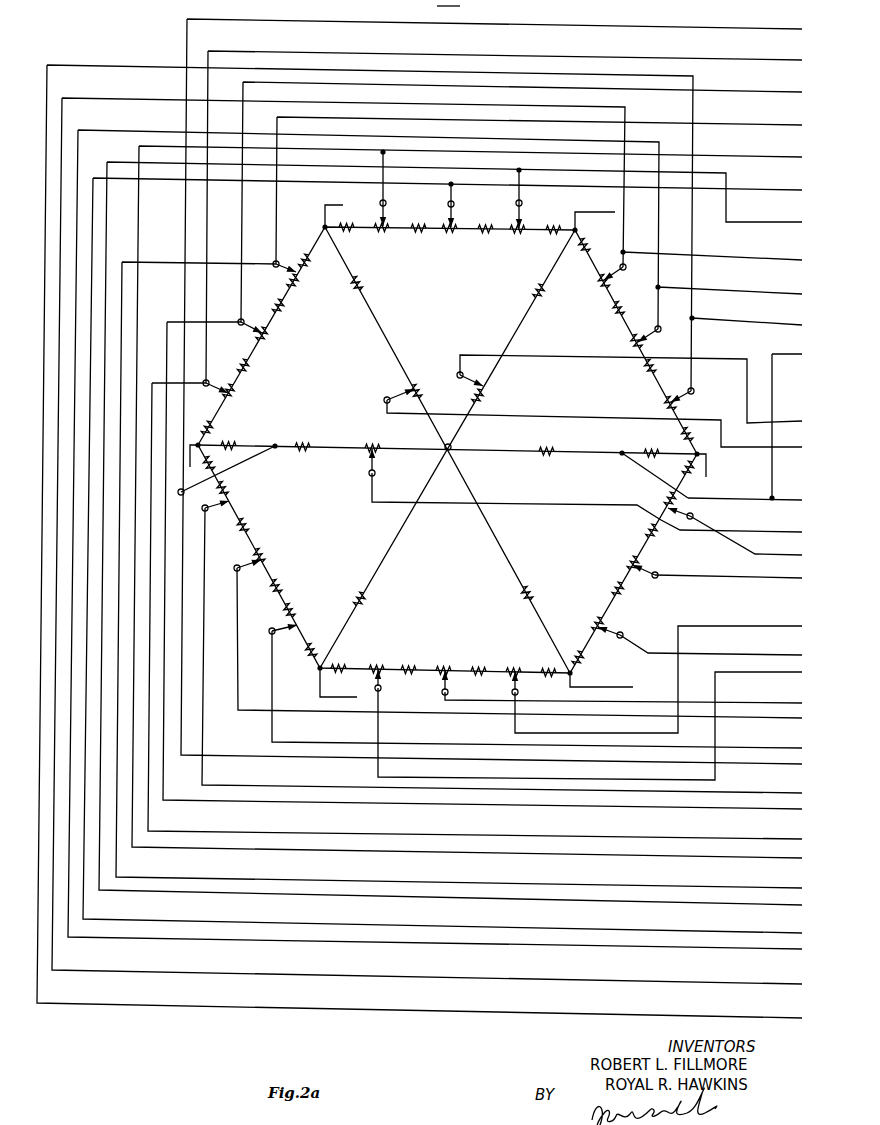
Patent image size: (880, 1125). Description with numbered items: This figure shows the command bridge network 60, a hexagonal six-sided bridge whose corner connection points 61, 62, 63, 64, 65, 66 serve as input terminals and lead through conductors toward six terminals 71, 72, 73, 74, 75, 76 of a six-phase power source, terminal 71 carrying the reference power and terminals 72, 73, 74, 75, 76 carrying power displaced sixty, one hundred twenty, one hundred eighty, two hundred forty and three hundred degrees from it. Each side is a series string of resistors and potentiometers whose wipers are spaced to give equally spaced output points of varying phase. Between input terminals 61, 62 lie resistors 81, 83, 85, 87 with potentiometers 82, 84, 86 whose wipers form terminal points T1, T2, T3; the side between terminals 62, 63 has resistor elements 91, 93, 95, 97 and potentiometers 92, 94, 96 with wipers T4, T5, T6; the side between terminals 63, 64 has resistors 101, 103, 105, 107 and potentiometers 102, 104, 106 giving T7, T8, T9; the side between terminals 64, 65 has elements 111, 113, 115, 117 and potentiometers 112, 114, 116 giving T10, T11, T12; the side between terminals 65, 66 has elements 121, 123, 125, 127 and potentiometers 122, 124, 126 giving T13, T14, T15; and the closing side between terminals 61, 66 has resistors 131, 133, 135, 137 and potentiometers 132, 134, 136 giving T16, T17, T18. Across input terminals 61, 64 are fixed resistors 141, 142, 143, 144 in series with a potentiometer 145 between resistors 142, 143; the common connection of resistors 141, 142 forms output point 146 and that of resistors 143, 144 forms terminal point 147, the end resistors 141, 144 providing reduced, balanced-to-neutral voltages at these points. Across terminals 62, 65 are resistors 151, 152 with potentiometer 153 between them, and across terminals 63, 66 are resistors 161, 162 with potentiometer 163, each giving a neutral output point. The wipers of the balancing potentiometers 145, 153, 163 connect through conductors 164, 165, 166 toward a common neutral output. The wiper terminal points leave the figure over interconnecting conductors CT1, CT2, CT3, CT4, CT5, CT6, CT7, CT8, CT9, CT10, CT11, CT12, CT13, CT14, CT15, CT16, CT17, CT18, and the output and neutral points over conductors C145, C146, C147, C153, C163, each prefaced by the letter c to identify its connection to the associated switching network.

The bridge network 60 is at (467, 316).
The input terminal 61 is at (705, 444).
The input terminal 62 is at (580, 231).
The input terminal 63 is at (312, 218).
The input terminal 64 is at (198, 443).
The input terminal 65 is at (318, 670).
The input terminal 66 is at (574, 674).
The terminal 71 is at (710, 466).
The terminal 72 is at (594, 210).
The terminal 73 is at (348, 208).
The terminal 74 is at (194, 467).
The terminal 75 is at (343, 682).
The terminal 76 is at (615, 675).
The resistor 81 is at (674, 433).
The potentiometer 82 is at (656, 406).
The resistor 83 is at (637, 372).
The potentiometer 84 is at (623, 344).
The resistor 85 is at (605, 313).
The potentiometer 86 is at (592, 286).
The resistor 87 is at (577, 256).
The resistor 91 is at (556, 239).
The potentiometer 92 is at (521, 245).
The resistor 93 is at (486, 239).
The potentiometer 94 is at (454, 245).
The resistor 95 is at (421, 238).
The potentiometer 96 is at (385, 244).
The resistor 97 is at (350, 238).
The resistor 101 is at (321, 260).
The potentiometer 102 is at (313, 283).
The resistor 103 is at (299, 307).
The potentiometer 104 is at (280, 337).
The resistor 105 is at (262, 367).
The potentiometer 106 is at (248, 392).
The resistor 107 is at (229, 423).
The resistor 111 is at (226, 462).
The potentiometer 112 is at (238, 485).
The resistor 113 is at (258, 523).
The potentiometer 114 is at (275, 552).
The resistor 115 is at (292, 582).
The potentiometer 116 is at (307, 607).
The resistor 117 is at (321, 641).
The resistor 121 is at (347, 658).
The potentiometer 122 is at (381, 653).
The resistor 123 is at (416, 659).
The potentiometer 124 is at (452, 655).
The resistor 125 is at (486, 659).
The potentiometer 126 is at (516, 655).
The resistor 127 is at (546, 661).
The resistor 131 is at (574, 649).
The potentiometer 132 is at (588, 617).
The resistor 133 is at (610, 583).
The potentiometer 134 is at (624, 554).
The resistor 135 is at (639, 528).
The potentiometer 136 is at (659, 495).
The resistor 137 is at (676, 467).
The fixed resistor 141 is at (247, 436).
The fixed resistor 142 is at (310, 434).
The fixed resistor 143 is at (559, 439).
The fixed resistor 144 is at (636, 442).
The potentiometer 145 is at (388, 448).
The output point 146 is at (284, 458).
The terminal point 147 is at (637, 474).
The resistor 151 is at (352, 583).
The resistor 152 is at (525, 287).
The potentiometer 153 is at (496, 388).
The resistor 161 is at (375, 283).
The resistor 162 is at (540, 585).
The potentiometer 163 is at (414, 381).
The conductor 164 is at (516, 496).
The conductor 165 is at (594, 419).
The conductor 166 is at (631, 377).
The terminal point T1 is at (692, 394).
The terminal point T2 is at (658, 334).
The terminal point T3 is at (624, 273).
The terminal point T4 is at (530, 197).
The terminal point T5 is at (462, 204).
The terminal point T6 is at (393, 187).
The terminal point T7 is at (286, 261).
The terminal point T8 is at (251, 322).
The terminal point T9 is at (216, 382).
The terminal point T10 is at (219, 513).
The terminal point T11 is at (252, 574).
The terminal point T12 is at (286, 639).
The terminal point T13 is at (394, 683).
The terminal point T14 is at (461, 685).
The terminal point T15 is at (531, 686).
The terminal point T16 is at (611, 640).
The terminal point T17 is at (650, 581).
The terminal point T18 is at (696, 513).
The interconnecting conductor CT1 is at (419, 541).
The interconnecting conductor CT2 is at (435, 539).
The interconnecting conductor CT3 is at (427, 541).
The interconnecting conductor CT4 is at (450, 533).
The interconnecting conductor CT5 is at (442, 552).
The interconnecting conductor CT6 is at (467, 498).
The interconnecting conductor CT7 is at (459, 497).
The interconnecting conductor CT8 is at (482, 441).
The interconnecting conductor CT9 is at (475, 440).
The interconnecting conductor CT10 is at (502, 650).
The interconnecting conductor CT11 is at (519, 643).
The interconnecting conductor CT12 is at (537, 689).
The interconnecting conductor CT13 is at (590, 716).
The interconnecting conductor CT14 is at (623, 693).
The interconnecting conductor CT15 is at (658, 670).
The interconnecting conductor CT16 is at (711, 645).
The interconnecting conductor CT17 is at (728, 568).
The interconnecting conductor CT18 is at (746, 535).
The interconnecting conductor C145 is at (731, 522).
The interconnecting conductor C146 is at (490, 387).
The interconnecting conductor C147 is at (745, 418).
The interconnecting conductor C153 is at (778, 410).
The interconnecting conductor C163 is at (778, 437).